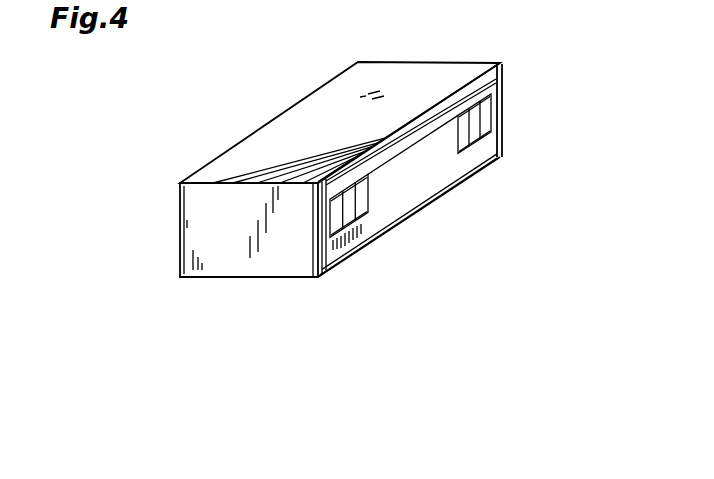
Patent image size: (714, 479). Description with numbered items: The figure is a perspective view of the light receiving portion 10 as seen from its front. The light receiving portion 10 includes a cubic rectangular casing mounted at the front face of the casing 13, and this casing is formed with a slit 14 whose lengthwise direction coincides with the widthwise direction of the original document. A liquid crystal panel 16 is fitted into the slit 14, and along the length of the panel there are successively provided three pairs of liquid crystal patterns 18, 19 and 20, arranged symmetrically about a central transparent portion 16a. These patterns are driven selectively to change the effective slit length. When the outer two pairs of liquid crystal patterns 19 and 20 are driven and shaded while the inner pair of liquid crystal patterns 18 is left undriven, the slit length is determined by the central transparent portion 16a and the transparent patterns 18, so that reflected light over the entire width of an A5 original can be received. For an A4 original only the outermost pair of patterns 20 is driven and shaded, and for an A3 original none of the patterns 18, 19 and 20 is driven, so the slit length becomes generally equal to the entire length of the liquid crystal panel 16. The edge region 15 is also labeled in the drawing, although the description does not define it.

The light receiving portion 10 is at (383, 97).
The casing 13 is at (250, 237).
The slit 14 is at (422, 167).
The bottom edge 15 is at (325, 277).
The liquid crystal panel 16 is at (410, 160).
The central transparent portion 16a is at (387, 190).
The liquid crystal patterns 18 is at (497, 154).
The liquid crystal patterns 19 is at (464, 141).
The liquid crystal patterns 20 is at (486, 120).